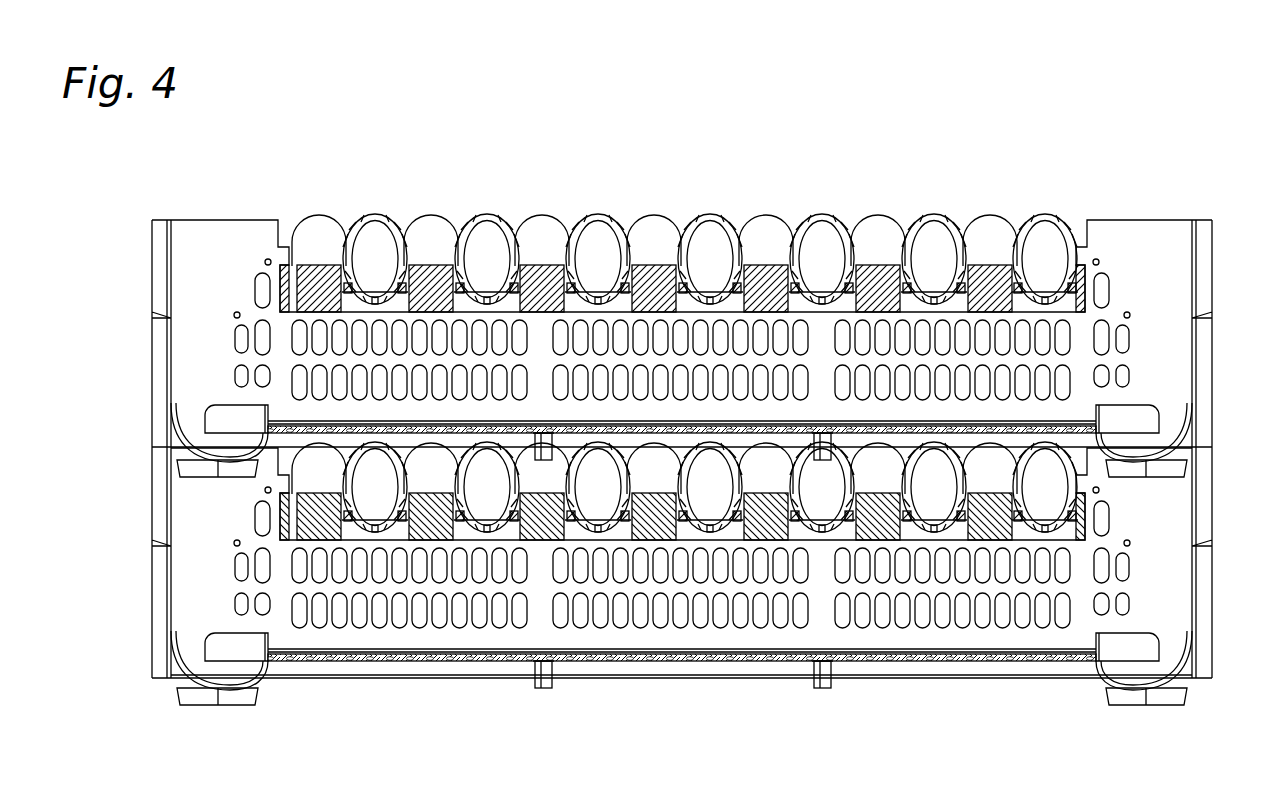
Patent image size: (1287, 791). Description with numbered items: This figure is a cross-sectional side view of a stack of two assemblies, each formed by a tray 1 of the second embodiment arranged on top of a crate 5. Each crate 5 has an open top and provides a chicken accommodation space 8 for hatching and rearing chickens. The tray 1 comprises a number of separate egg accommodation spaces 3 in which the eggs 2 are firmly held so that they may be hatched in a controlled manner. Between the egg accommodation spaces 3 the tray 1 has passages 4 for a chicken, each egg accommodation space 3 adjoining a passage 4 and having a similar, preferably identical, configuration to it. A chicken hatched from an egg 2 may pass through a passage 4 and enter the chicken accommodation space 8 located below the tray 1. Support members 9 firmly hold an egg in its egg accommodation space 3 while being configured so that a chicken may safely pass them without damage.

The tray 1 is at (1082, 268).
The egg 2 is at (822, 247).
The egg accommodation space 3 is at (595, 207).
The passage 4 is at (990, 270).
The crate 5 is at (1152, 258).
The chicken accommodation space 8 is at (538, 362).
The support member 9 is at (517, 513).